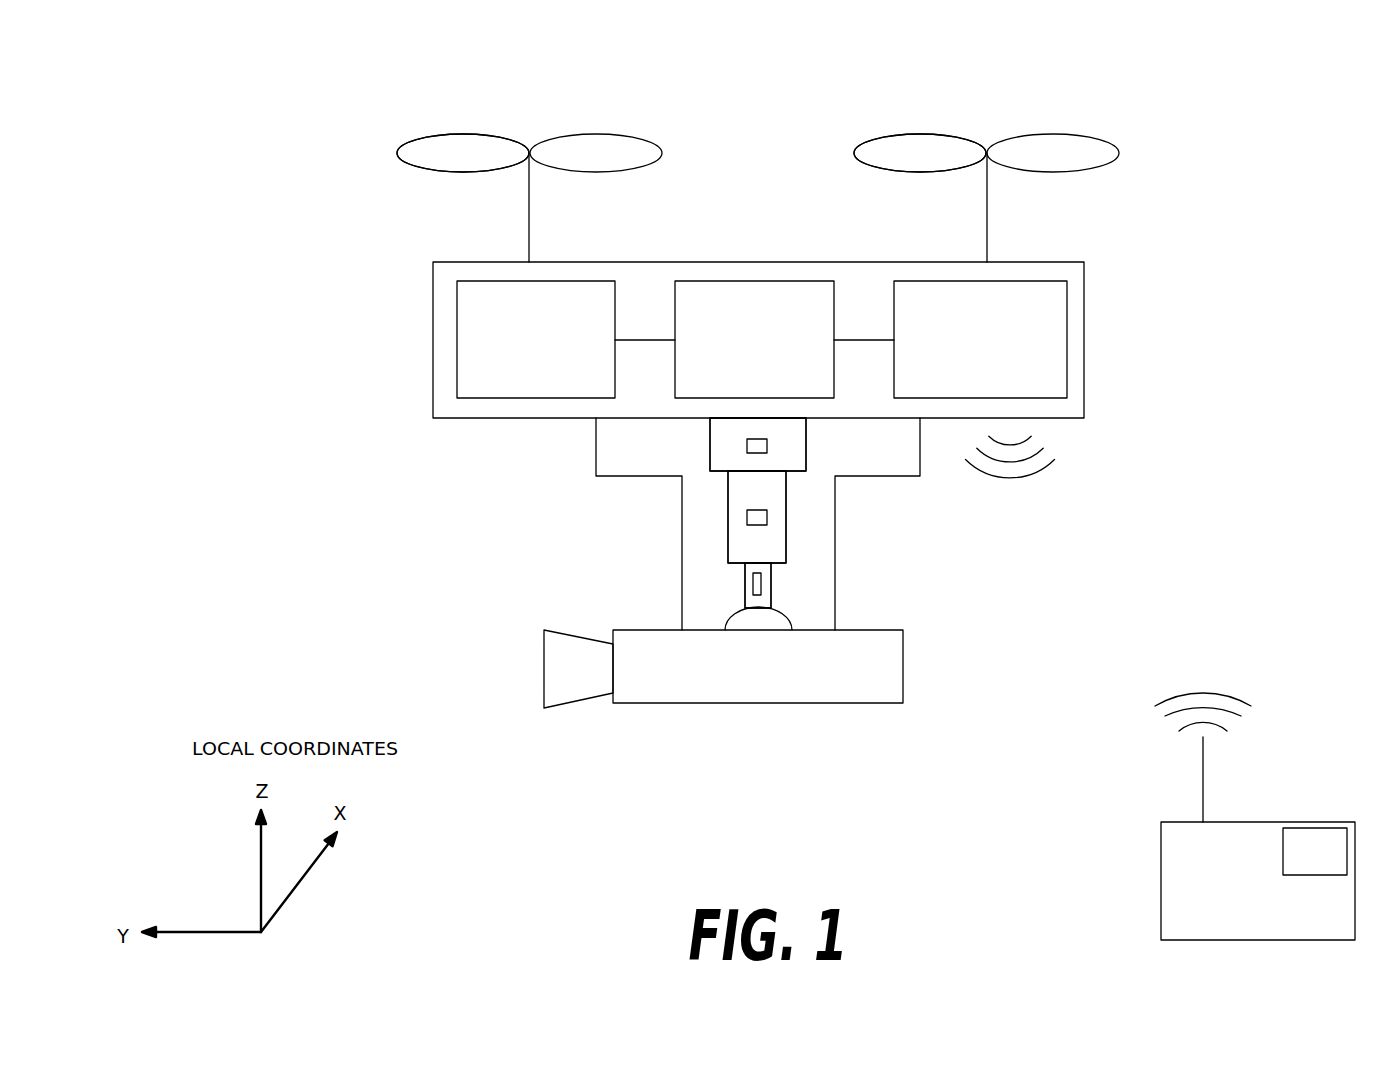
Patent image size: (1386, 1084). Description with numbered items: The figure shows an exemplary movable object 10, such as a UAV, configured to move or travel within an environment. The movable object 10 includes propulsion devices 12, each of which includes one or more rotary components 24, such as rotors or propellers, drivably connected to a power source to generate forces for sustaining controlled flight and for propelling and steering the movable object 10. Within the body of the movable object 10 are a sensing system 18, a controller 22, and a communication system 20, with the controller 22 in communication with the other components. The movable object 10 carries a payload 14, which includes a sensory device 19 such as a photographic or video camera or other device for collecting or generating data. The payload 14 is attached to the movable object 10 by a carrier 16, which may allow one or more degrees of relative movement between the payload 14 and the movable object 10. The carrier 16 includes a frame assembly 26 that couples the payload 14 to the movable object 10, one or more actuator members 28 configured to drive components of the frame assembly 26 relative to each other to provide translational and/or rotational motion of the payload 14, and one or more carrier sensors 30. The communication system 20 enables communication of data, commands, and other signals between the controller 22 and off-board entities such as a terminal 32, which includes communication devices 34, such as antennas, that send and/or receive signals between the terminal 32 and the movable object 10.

The movable object 10 is at (681, 340).
The propulsion device 12 is at (370, 167).
The payload 14 is at (518, 671).
The carrier 16 is at (936, 530).
The sensing system 18 is at (536, 339).
The sensory device 19 is at (758, 666).
The communication system 20 is at (980, 379).
The controller 22 is at (754, 339).
The rotary component 24 is at (495, 135).
The frame assembly 26 is at (597, 476).
The actuator member 28 is at (710, 446).
The carrier sensor 30 is at (758, 447).
The terminal 32 is at (1255, 816).
The communication device 34 is at (1315, 851).